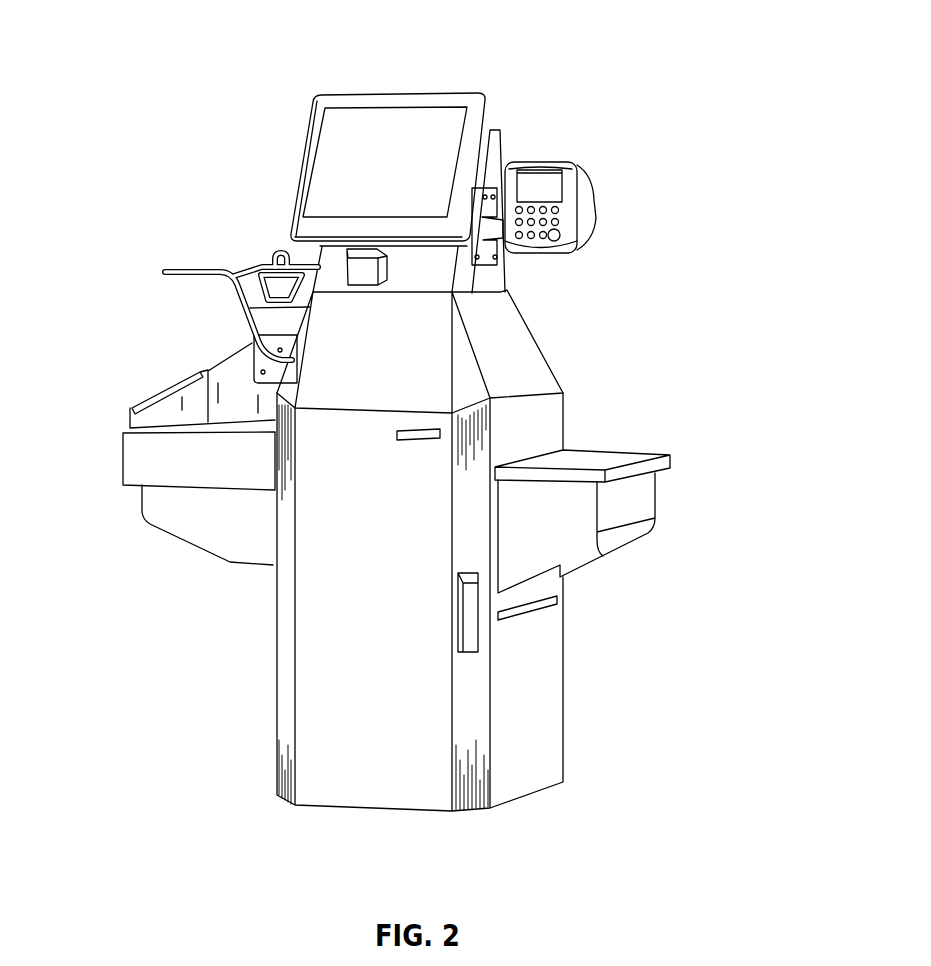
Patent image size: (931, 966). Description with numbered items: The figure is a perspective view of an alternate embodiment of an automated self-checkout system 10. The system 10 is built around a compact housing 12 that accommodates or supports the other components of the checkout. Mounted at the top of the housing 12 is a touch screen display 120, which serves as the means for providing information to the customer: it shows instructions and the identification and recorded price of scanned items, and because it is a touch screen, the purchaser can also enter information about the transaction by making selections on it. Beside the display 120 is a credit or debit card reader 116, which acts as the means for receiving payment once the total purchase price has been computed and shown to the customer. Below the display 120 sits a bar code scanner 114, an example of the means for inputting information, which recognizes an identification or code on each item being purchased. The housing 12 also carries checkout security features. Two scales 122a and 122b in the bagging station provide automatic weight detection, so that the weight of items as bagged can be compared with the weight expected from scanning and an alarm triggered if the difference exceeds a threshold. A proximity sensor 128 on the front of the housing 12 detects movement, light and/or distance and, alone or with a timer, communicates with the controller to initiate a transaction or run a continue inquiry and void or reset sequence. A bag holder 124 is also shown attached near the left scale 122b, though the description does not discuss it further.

The automated self-checkout system 10 is at (381, 413).
The housing 12 is at (285, 662).
The touch screen display 120 is at (350, 186).
The credit card reader 116 is at (547, 163).
The bar code scanner 114 is at (367, 270).
The bag holder 124 is at (228, 295).
The scale 122b is at (197, 430).
The scale 122a is at (598, 458).
The proximity sensor 128 is at (445, 434).